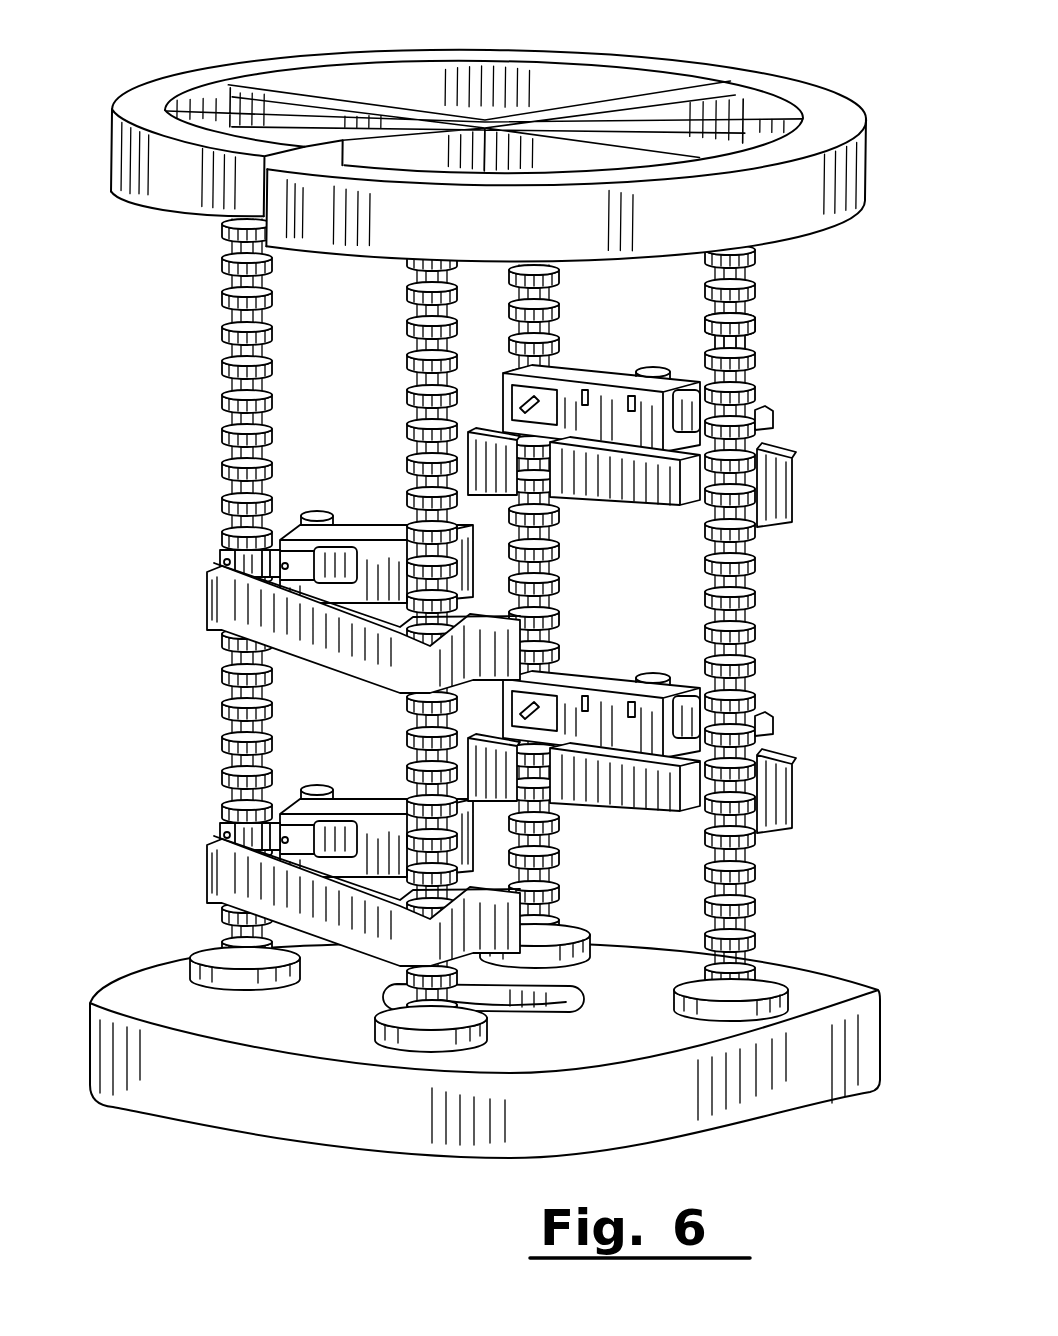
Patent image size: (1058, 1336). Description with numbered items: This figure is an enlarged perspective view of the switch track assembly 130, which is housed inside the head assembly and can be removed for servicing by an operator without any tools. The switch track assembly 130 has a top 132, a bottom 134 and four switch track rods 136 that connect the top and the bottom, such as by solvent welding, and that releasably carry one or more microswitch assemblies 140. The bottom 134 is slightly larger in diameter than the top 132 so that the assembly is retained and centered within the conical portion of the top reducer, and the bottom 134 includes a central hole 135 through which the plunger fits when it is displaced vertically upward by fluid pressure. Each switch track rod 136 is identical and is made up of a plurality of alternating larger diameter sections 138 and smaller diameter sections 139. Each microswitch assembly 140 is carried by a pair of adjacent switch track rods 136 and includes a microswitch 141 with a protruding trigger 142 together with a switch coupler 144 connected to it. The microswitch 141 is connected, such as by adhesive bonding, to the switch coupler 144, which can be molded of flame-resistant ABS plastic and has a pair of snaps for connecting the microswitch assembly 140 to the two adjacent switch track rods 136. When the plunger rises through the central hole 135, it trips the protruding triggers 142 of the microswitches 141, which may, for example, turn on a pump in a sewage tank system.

The switch track assembly 130 is at (513, 579).
The top 132 is at (767, 79).
The bottom 134 is at (836, 992).
The central hole 135 is at (573, 1015).
The switch track rod 136 is at (786, 291).
The larger diameter section 138 is at (762, 322).
The smaller diameter section 139 is at (750, 343).
The microswitch assembly 140 is at (607, 525).
The microswitch 141 is at (383, 528).
The protruding trigger 142 is at (531, 408).
The switch coupler 144 is at (228, 590).